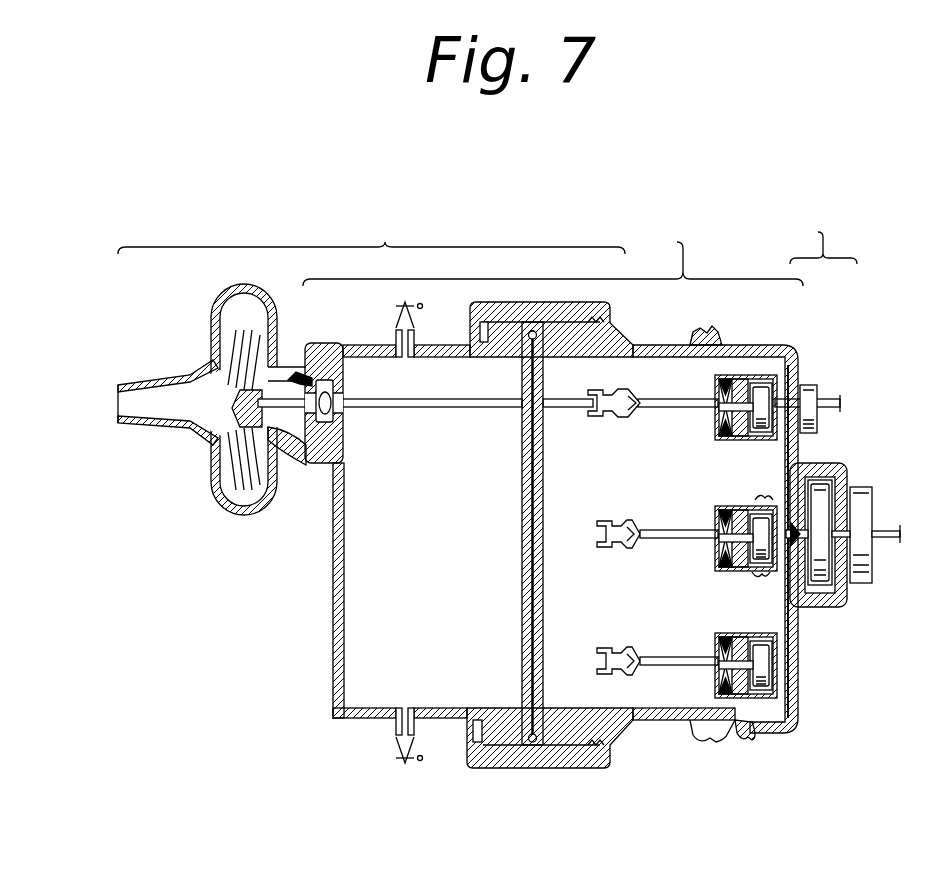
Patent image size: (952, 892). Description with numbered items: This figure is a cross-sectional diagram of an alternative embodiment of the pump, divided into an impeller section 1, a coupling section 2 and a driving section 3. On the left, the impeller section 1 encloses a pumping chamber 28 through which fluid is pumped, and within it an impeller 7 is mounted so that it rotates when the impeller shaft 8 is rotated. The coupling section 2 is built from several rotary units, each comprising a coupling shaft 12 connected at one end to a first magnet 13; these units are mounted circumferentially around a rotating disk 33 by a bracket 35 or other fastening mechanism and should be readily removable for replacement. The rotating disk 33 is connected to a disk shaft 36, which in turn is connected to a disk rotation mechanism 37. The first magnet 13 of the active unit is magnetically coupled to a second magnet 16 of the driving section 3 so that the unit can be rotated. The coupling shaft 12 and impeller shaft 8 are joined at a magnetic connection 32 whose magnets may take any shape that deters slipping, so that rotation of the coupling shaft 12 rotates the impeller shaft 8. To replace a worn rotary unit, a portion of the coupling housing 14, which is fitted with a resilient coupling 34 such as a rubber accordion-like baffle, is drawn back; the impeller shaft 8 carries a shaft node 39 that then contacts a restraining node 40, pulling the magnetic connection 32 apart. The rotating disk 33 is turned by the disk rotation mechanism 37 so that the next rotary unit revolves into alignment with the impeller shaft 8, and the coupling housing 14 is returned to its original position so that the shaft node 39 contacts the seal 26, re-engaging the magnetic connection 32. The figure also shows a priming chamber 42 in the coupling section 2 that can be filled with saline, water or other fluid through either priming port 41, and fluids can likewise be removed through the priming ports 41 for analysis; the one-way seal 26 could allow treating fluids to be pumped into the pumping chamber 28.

The impeller section 1 is at (385, 243).
The coupling section 2 is at (683, 262).
The driving section 3 is at (823, 238).
The impeller 7 is at (227, 367).
The impeller shaft 8 is at (437, 400).
The coupling shaft 12 is at (670, 663).
The first magnet 13 is at (763, 392).
The coupling housing 14 is at (623, 723).
The second magnet 16 is at (810, 400).
The seal 26 is at (294, 375).
The pumping chamber 28 is at (223, 487).
The magnetic connection 32 is at (612, 403).
The rotating disk 33 is at (793, 380).
The resilient coupling 34 is at (712, 743).
The bracket 35 is at (768, 617).
The disk shaft 36 is at (800, 522).
The disk rotation mechanism 37 is at (828, 540).
The shaft node 39 is at (323, 430).
The restraining node 40 is at (340, 378).
The priming port 41 is at (410, 737).
The priming chamber 42 is at (372, 693).